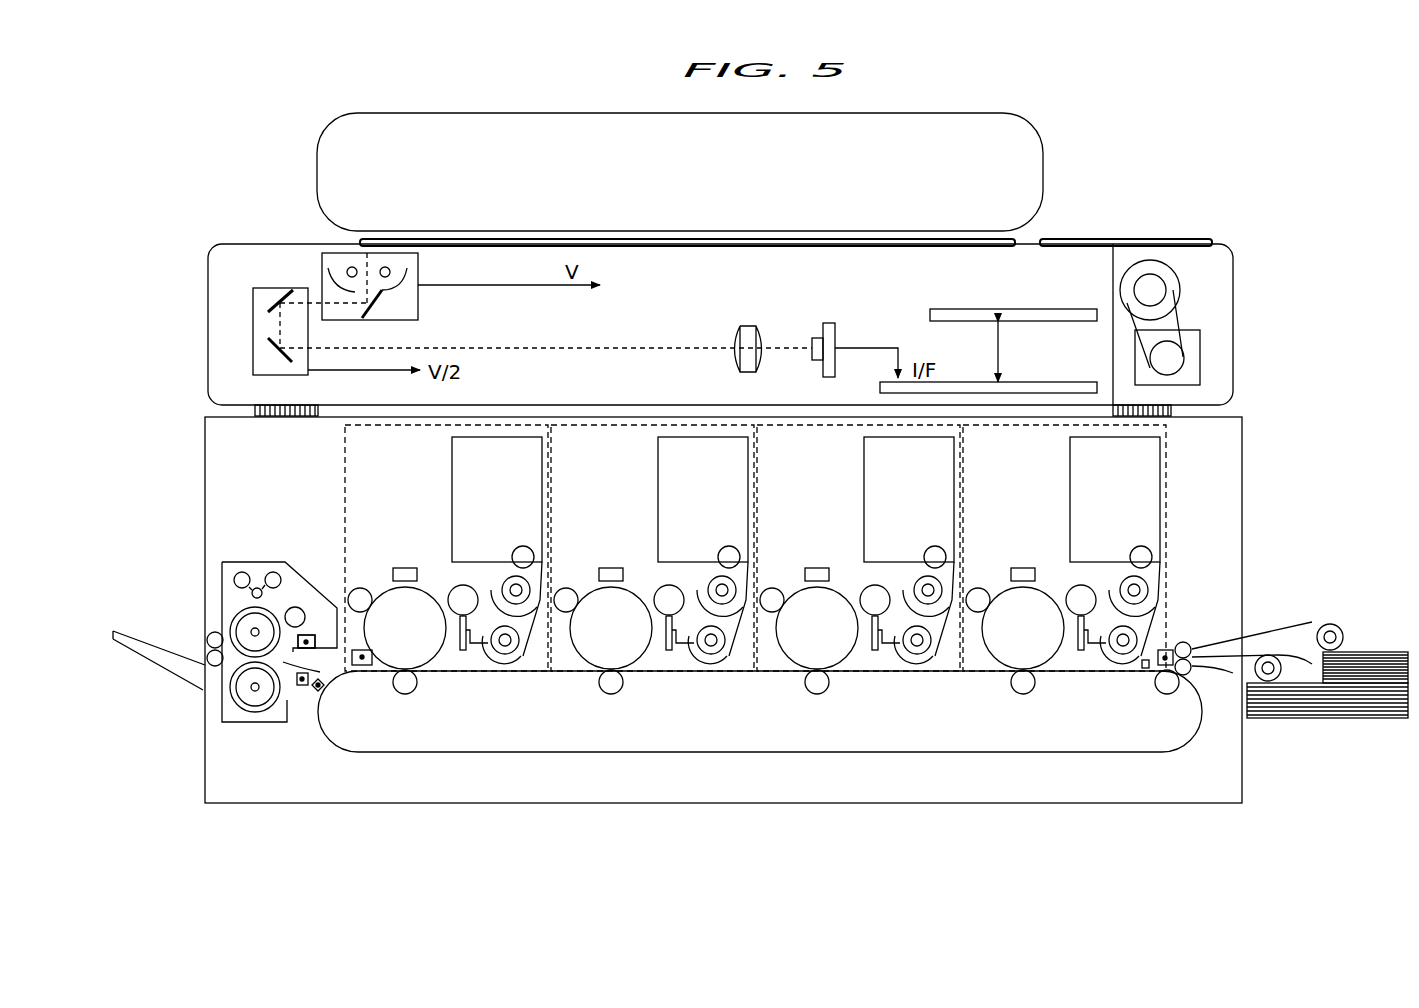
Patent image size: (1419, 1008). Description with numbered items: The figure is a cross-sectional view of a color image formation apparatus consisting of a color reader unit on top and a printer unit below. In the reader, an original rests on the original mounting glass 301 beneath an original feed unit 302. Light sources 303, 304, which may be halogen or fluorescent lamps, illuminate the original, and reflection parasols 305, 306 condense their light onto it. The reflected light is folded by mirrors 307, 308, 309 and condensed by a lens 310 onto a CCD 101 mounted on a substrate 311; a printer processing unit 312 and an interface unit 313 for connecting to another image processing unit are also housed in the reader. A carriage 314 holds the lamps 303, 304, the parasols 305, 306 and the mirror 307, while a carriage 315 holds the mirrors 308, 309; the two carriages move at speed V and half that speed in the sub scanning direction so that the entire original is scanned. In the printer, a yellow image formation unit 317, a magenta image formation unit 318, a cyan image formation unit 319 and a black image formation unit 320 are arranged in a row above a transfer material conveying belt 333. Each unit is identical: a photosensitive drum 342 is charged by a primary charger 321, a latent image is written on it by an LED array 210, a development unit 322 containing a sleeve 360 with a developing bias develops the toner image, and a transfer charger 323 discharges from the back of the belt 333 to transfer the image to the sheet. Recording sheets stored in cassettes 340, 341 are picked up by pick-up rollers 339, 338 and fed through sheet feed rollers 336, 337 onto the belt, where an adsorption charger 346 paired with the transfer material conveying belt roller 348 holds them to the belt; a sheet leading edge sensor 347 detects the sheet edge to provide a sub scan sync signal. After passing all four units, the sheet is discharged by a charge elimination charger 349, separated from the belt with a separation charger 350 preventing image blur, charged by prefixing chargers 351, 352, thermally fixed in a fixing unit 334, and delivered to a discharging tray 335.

The CCD 101 is at (817, 338).
The LED array 210 is at (1022, 568).
The original mounting glass 301 is at (484, 239).
The original feed unit 302 is at (1043, 152).
The light source 303 is at (385, 267).
The light source 304 is at (352, 267).
The reflection parasol 305 is at (418, 278).
The reflection parasol 306 is at (335, 284).
The mirror 307 is at (387, 320).
The mirror 308 is at (253, 298).
The mirror 309 is at (253, 362).
The lens 310 is at (748, 327).
The substrate 311 is at (836, 332).
The printer processing unit 312 is at (1075, 382).
The interface unit 313 is at (1075, 309).
The carriage 314 is at (322, 256).
The carriage 315 is at (253, 334).
The yellow image formation unit 317 is at (1090, 586).
The magenta image formation unit 318 is at (840, 498).
The cyan image formation unit 319 is at (634, 498).
The black image formation unit 320 is at (428, 498).
The primary charger 321 is at (980, 588).
The development unit 322 is at (1150, 488).
The transfer charger 323 is at (1027, 695).
The transfer material conveying belt 333 is at (520, 752).
The fixing unit 334 is at (236, 607).
The discharging tray 335 is at (158, 650).
The sheet feed roller 336 is at (1240, 652).
The sheet feed roller 337 is at (1196, 690).
The pick-up roller 338 is at (1270, 682).
The pick-up roller 339 is at (1335, 624).
The cassette 340 is at (1385, 719).
The cassette 341 is at (1390, 652).
The photosensitive drum 342 is at (1010, 655).
The adsorption charger 346 is at (1191, 647).
The sheet leading edge sensor 347 is at (1172, 648).
The transfer material conveying belt roller 348 is at (1167, 695).
The charge elimination charger 349 is at (358, 665).
The separation charger 350 is at (307, 698).
The prefixing charger 351 is at (305, 635).
The prefixing charger 352 is at (316, 590).
The sleeve 360 is at (1073, 588).